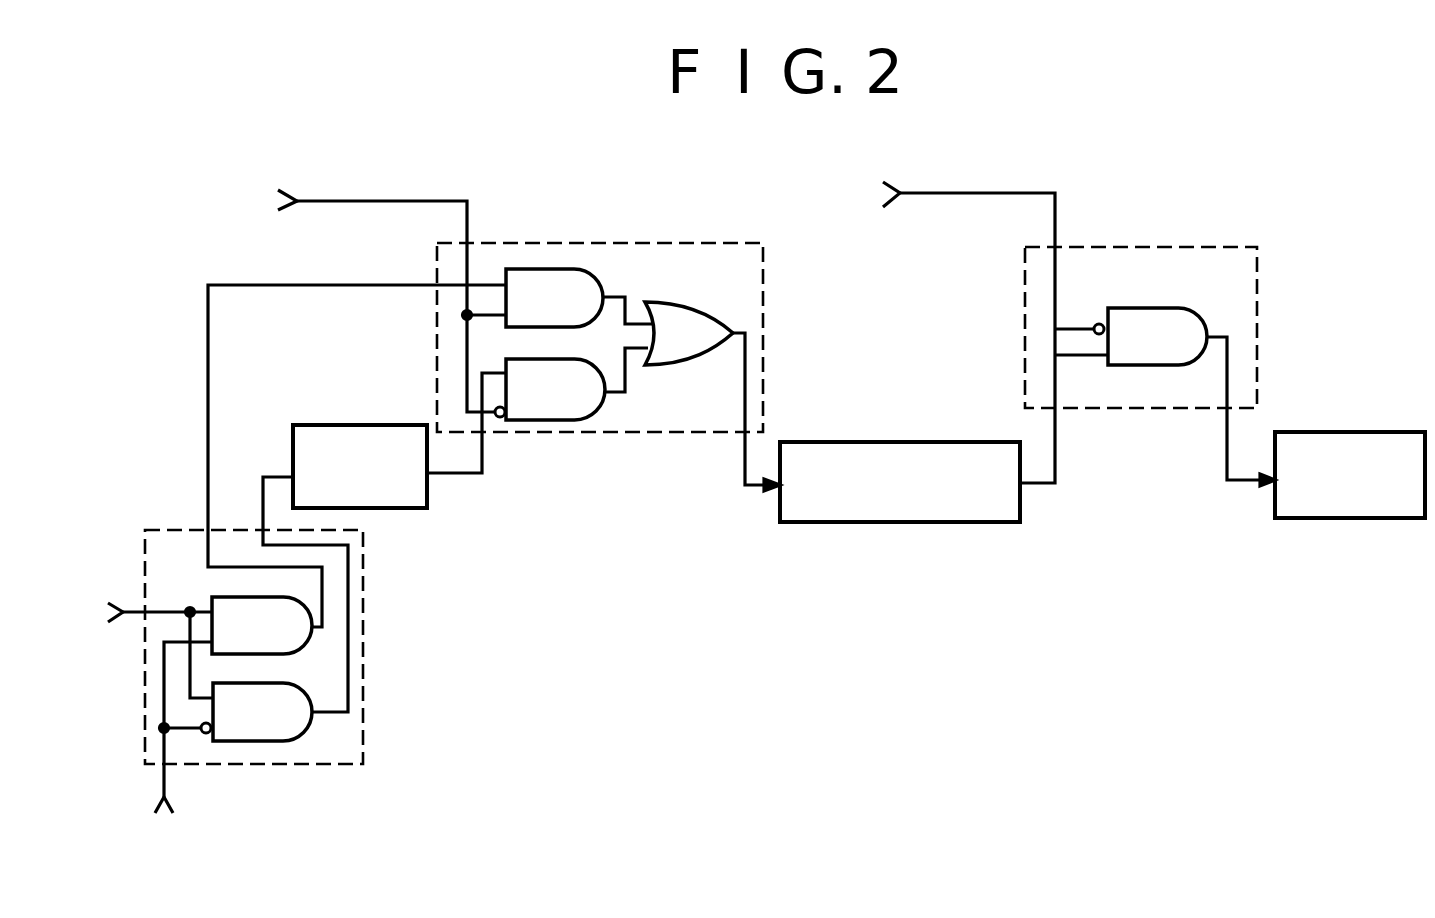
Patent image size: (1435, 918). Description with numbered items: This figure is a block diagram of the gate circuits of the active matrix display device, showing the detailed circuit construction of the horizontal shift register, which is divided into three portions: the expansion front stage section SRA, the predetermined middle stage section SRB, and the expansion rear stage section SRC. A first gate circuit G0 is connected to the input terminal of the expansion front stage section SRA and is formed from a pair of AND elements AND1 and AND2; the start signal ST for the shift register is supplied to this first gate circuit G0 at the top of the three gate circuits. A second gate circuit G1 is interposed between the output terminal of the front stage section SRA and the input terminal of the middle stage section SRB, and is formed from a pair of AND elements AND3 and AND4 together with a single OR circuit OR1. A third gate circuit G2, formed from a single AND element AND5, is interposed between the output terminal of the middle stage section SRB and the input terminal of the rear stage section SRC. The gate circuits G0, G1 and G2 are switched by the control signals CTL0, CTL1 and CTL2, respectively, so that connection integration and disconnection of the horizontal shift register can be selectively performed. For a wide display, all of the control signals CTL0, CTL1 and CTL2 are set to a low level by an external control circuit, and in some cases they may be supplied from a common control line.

The first gate circuit G0 is at (282, 647).
The second gate circuit G1 is at (600, 320).
The third gate circuit G2 is at (1141, 307).
The expansion front stage section SRA is at (360, 466).
The predetermined middle stage section SRB is at (900, 482).
The expansion rear stage section SRC is at (1350, 475).
The AND element AND1 is at (262, 625).
The AND element AND2 is at (256, 712).
The AND element AND3 is at (554, 298).
The AND element AND4 is at (550, 389).
The AND element AND5 is at (1150, 336).
The OR circuit OR1 is at (689, 333).
The control signal CTL0 is at (186, 747).
The control signal CTL1 is at (392, 287).
The control signal CTL2 is at (995, 317).
The start signal ST is at (135, 649).